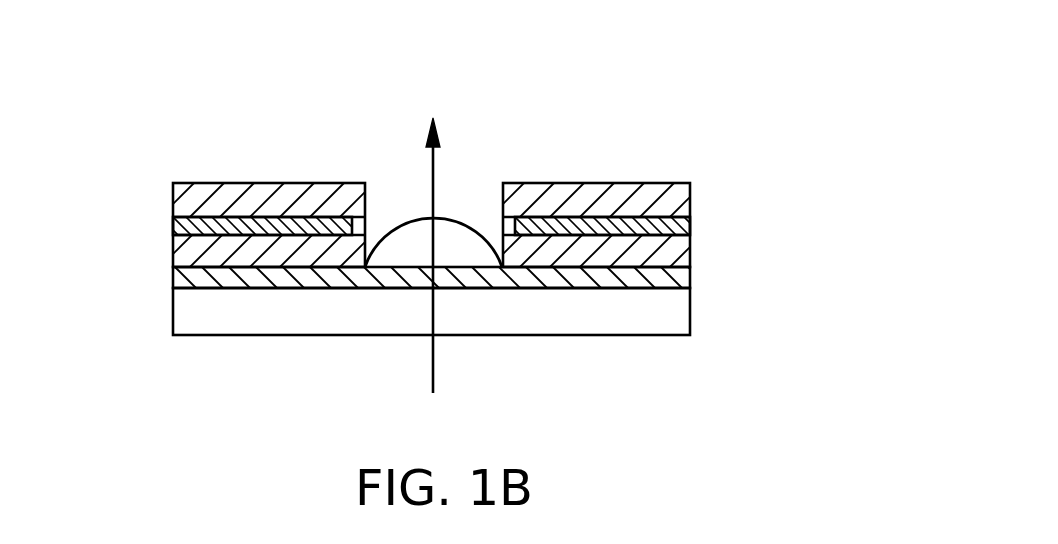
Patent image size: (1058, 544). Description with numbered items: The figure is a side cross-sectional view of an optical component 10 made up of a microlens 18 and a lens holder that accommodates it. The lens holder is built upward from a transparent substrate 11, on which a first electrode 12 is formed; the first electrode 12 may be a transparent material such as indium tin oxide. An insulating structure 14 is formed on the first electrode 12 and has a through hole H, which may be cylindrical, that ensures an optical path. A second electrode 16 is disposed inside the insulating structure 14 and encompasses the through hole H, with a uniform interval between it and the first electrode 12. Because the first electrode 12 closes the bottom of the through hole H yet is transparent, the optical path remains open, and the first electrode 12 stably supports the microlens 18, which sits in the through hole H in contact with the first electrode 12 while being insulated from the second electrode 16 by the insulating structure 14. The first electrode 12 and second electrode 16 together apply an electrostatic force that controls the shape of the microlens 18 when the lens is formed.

The optical component 10 is at (655, 172).
The transparent substrate 11 is at (683, 322).
The first electrode 12 is at (683, 280).
The insulating structure 14 is at (186, 257).
The second electrode 16 is at (687, 225).
The microlens 18 is at (415, 220).
The through hole H is at (387, 180).